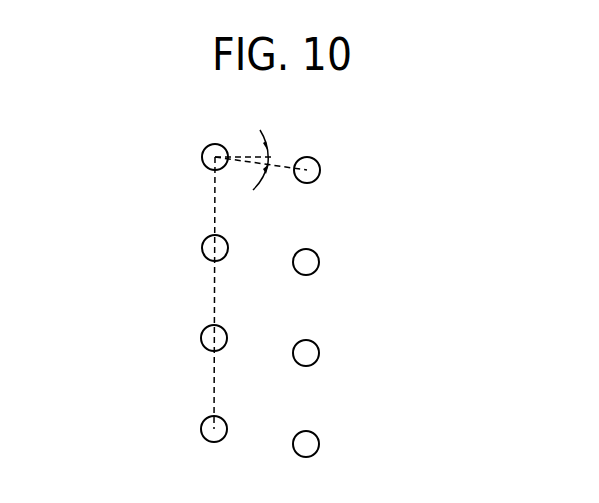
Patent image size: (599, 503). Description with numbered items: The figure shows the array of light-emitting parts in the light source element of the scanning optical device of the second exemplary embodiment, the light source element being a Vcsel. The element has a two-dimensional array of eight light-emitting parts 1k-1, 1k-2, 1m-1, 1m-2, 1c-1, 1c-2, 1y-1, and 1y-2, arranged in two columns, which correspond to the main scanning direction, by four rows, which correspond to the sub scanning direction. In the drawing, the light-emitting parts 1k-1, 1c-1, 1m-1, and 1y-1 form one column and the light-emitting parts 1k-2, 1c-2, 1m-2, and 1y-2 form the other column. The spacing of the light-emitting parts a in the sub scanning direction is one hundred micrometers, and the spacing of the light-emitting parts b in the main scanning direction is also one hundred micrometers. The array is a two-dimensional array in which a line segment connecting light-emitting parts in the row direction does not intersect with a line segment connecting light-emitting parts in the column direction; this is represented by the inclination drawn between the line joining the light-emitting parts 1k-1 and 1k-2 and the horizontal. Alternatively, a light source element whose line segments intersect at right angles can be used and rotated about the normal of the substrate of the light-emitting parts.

The light-emitting part 1k-1 is at (183, 157).
The light-emitting part 1k-2 is at (338, 170).
The light-emitting part 1c-1 is at (183, 248).
The light-emitting part 1c-2 is at (338, 263).
The light-emitting part 1m-1 is at (180, 339).
The light-emitting part 1m-2 is at (340, 354).
The light-emitting part 1y-1 is at (182, 430).
The light-emitting part 1y-2 is at (338, 445).
The spacing of light-emitting parts in the sub scanning direction a is at (233, 311).
The spacing of light-emitting parts in the main scanning direction b is at (250, 172).